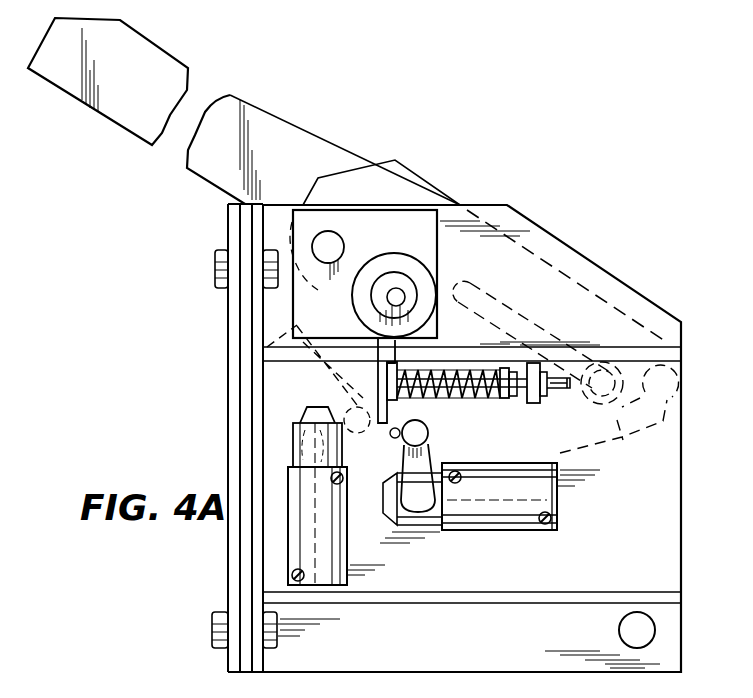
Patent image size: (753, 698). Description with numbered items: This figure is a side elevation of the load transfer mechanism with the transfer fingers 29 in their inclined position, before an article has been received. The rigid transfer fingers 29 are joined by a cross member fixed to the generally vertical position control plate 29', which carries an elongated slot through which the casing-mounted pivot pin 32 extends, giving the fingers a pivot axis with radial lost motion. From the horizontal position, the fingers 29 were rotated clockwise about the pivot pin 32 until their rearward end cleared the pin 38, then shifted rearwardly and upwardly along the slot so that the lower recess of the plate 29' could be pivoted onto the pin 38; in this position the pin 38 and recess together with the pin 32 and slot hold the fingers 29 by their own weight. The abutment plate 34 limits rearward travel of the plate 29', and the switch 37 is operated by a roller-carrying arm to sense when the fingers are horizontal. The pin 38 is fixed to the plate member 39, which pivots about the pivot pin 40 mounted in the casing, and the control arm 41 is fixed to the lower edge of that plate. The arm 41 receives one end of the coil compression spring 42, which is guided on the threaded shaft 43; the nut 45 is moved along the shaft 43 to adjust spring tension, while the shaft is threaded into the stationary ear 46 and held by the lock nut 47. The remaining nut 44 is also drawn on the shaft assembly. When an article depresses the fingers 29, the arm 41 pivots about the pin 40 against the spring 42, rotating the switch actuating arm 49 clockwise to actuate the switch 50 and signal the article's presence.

The transfer fingers 29 is at (108, 81).
The position control plate 29' is at (455, 253).
The pivot pin 32 is at (617, 420).
The abutment plate 34 is at (278, 360).
The switch 37 is at (332, 532).
The pin 38 is at (344, 244).
The plate member 39 is at (307, 317).
The pivot pin 40 is at (402, 297).
The control arm 41 is at (393, 436).
The coil compression spring 42 is at (450, 397).
The threaded shaft 43 is at (447, 362).
The nut 44 is at (505, 368).
The nut 45 is at (512, 400).
The stationary ear 46 is at (535, 404).
The lock nut 47 is at (545, 394).
The switch actuating arm 49 is at (424, 477).
The switch 50 is at (488, 508).